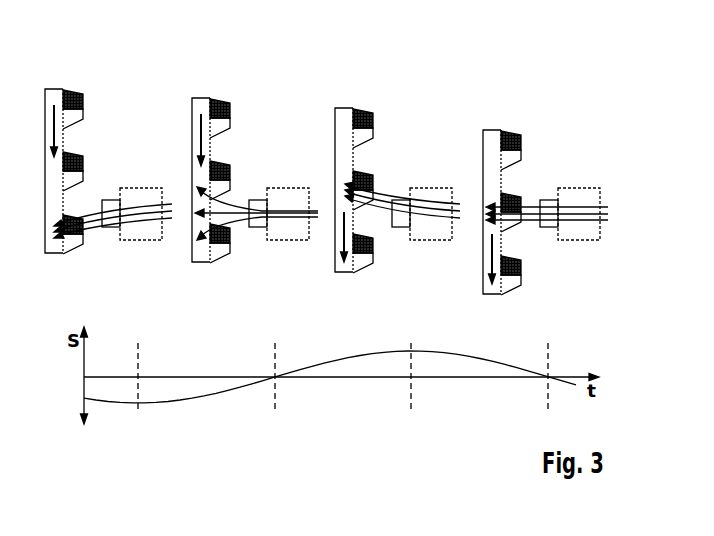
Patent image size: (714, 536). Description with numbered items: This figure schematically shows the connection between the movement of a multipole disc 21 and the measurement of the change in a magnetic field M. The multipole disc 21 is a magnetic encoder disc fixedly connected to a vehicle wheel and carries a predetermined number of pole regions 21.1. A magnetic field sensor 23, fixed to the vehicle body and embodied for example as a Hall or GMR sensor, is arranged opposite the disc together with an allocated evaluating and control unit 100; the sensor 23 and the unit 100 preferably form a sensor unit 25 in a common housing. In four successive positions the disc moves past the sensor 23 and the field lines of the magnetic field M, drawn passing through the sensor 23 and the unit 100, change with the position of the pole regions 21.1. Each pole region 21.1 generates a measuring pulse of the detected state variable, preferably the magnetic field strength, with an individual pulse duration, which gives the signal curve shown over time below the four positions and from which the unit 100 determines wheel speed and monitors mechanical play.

The multipole disc 21 is at (274, 167).
The pole region 21.1 is at (302, 174).
The magnetic field sensor 23 is at (332, 188).
The sensor unit 25 is at (347, 97).
The evaluating and control unit 100 is at (360, 195).
The magnetic field M is at (331, 200).